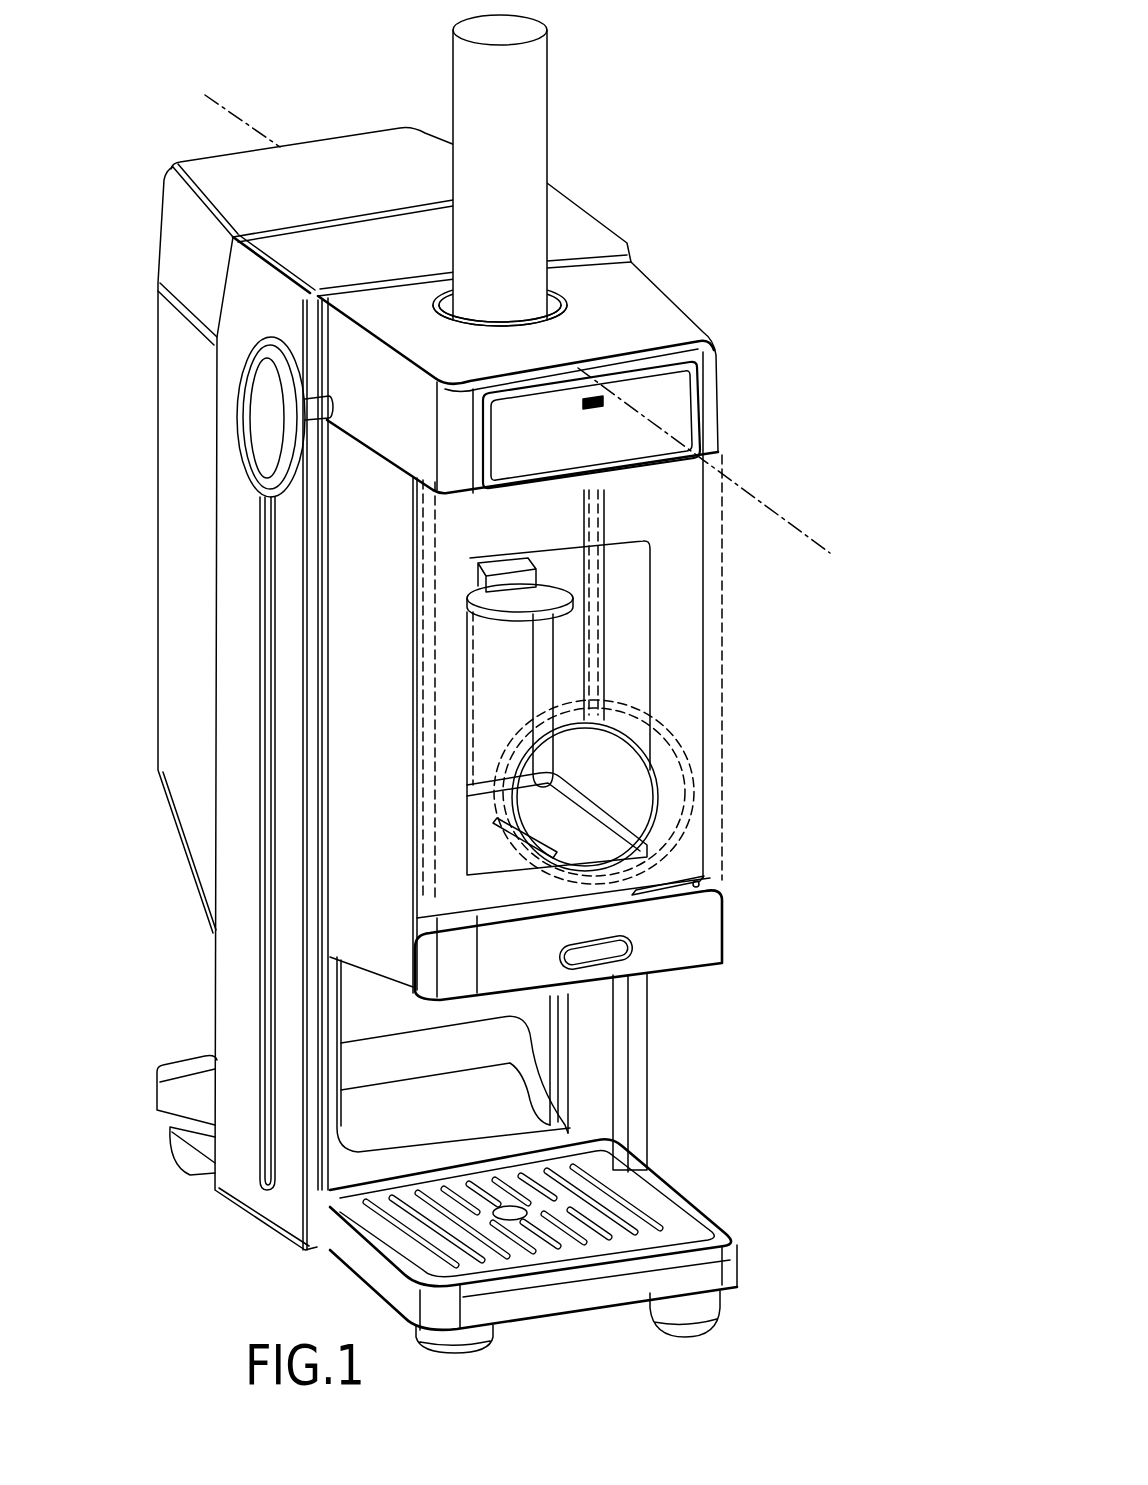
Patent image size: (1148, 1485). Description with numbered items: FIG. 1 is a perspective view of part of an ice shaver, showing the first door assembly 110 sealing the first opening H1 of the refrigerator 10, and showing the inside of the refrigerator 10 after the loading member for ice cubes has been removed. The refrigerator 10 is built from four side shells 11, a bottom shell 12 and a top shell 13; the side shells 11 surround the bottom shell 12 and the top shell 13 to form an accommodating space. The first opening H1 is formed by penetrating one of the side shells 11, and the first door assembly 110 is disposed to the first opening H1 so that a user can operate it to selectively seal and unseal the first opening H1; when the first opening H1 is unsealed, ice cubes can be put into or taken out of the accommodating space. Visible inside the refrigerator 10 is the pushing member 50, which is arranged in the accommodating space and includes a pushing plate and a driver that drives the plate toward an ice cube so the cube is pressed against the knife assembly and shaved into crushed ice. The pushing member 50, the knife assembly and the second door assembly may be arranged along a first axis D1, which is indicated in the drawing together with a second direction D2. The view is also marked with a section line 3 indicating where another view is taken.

The section line of FIG. 3 is at (180, 98).
The beverage machine main body 10 is at (584, 684).
The housing / support pillar 11 is at (178, 392).
The drawer base 12 is at (683, 972).
The top cover 13 is at (652, 317).
The dispensing nozzle assembly 50 is at (540, 600).
The opening H1 is at (651, 681).
The transparent cover 110 is at (720, 738).
The first direction D1 is at (762, 173).
The second direction D2 is at (762, 173).